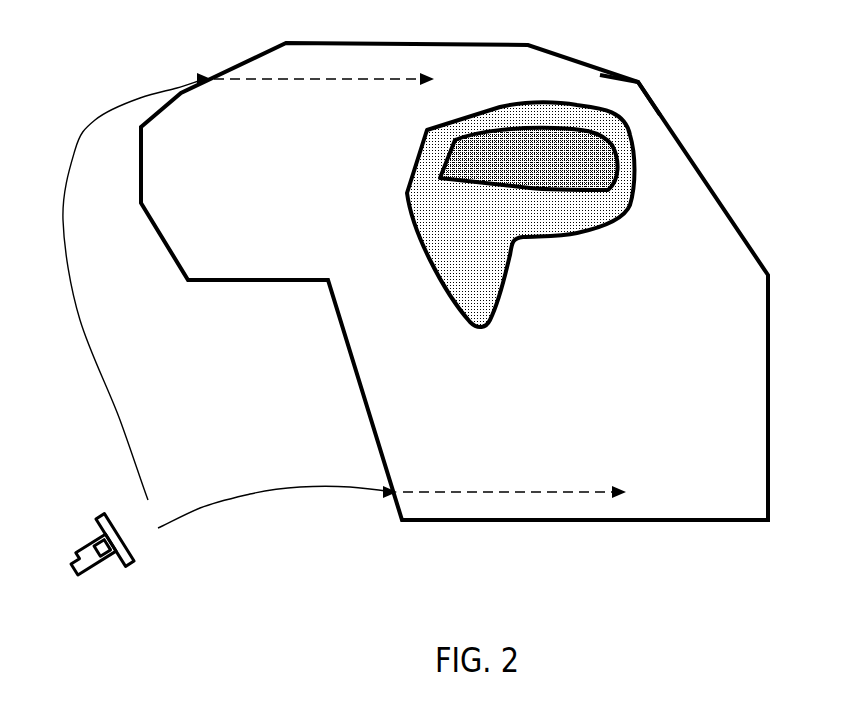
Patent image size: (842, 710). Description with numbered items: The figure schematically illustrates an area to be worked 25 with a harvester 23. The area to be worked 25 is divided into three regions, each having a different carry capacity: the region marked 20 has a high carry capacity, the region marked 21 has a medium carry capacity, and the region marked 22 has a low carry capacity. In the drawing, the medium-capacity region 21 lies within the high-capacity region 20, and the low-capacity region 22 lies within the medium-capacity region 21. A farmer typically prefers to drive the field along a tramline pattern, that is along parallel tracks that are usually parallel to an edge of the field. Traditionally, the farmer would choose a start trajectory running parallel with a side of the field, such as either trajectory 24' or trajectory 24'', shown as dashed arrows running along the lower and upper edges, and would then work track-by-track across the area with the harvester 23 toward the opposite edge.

The region with high carry capacity 20 is at (210, 252).
The region with medium carry capacity 21 is at (493, 255).
The region with low carry capacity 22 is at (598, 185).
The harvester 23 is at (90, 535).
The trajectory 24' is at (514, 461).
The trajectory 24'' is at (324, 105).
The area to be worked 25 is at (626, 67).